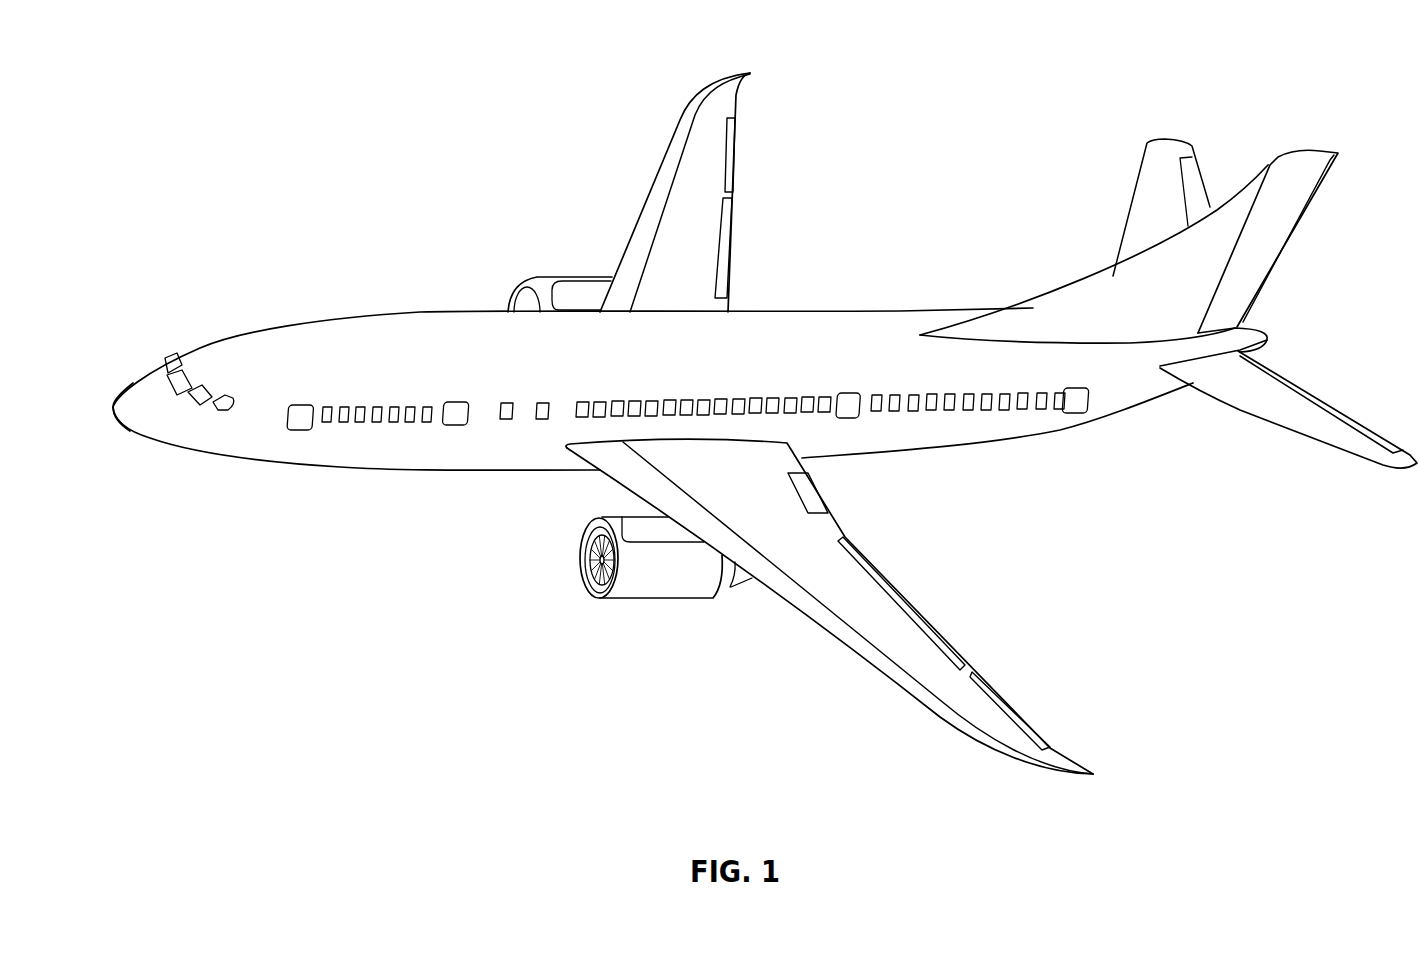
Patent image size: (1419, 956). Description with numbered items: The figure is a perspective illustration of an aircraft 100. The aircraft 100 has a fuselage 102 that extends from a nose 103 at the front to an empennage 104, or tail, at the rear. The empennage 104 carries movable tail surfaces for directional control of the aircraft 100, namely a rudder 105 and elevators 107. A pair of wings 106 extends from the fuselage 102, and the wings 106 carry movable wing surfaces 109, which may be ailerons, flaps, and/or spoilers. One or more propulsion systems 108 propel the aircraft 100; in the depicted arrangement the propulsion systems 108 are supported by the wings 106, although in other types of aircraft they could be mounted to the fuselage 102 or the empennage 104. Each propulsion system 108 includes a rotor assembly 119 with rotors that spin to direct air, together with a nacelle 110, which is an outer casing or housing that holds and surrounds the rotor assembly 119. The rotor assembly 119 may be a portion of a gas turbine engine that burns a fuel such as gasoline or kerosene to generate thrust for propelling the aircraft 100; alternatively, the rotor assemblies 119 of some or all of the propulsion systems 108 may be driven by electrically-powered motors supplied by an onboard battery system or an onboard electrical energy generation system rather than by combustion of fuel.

The aircraft 100 is at (224, 333).
The fuselage 102 is at (862, 308).
The nose 103 is at (113, 407).
The empennage 104 is at (1255, 305).
The rudder 105 is at (1287, 225).
The wings 106 is at (665, 165).
The elevators 107 is at (1197, 184).
The propulsion systems 108 is at (545, 287).
The movable wing surfaces 109 is at (731, 170).
The nacelle 110 is at (650, 583).
The rotor assembly 119 is at (597, 557).